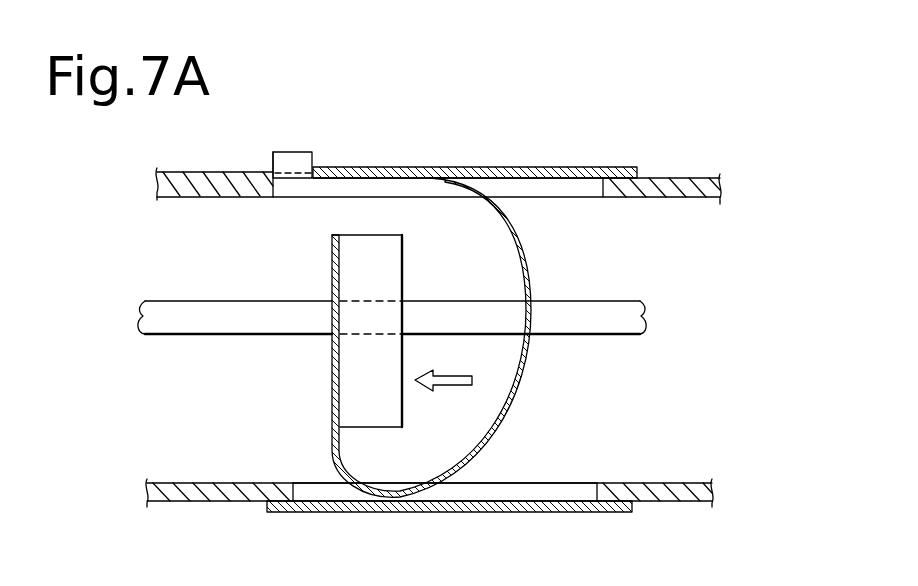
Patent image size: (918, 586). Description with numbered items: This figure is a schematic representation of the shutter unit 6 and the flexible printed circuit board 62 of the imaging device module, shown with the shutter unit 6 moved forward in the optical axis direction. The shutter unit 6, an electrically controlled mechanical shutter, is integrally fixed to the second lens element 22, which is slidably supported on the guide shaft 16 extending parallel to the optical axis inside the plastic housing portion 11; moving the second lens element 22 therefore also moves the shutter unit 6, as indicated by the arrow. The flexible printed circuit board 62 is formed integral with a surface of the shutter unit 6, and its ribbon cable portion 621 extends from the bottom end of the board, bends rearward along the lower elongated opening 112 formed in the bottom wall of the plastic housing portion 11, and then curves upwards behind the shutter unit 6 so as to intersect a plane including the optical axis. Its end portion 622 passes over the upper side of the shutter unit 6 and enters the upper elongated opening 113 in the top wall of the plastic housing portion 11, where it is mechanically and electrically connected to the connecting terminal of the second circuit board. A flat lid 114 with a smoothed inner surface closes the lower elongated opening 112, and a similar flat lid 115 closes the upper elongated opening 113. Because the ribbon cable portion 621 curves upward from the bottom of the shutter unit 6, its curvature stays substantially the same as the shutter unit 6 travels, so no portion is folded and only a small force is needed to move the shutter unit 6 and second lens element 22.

The plastic housing portion 11 is at (468, 317).
The guide shaft 16 is at (198, 318).
The flexible printed circuit board 62 is at (452, 331).
The ribbon cable portion 621 is at (532, 278).
The end portion 622 is at (297, 158).
The second lens element 22 is at (384, 351).
The shutter unit 6 is at (387, 412).
The lower elongated opening 112 is at (567, 490).
The upper elongated opening 113 is at (590, 188).
The flat lid 114 is at (525, 512).
The flat lid 115 is at (525, 170).